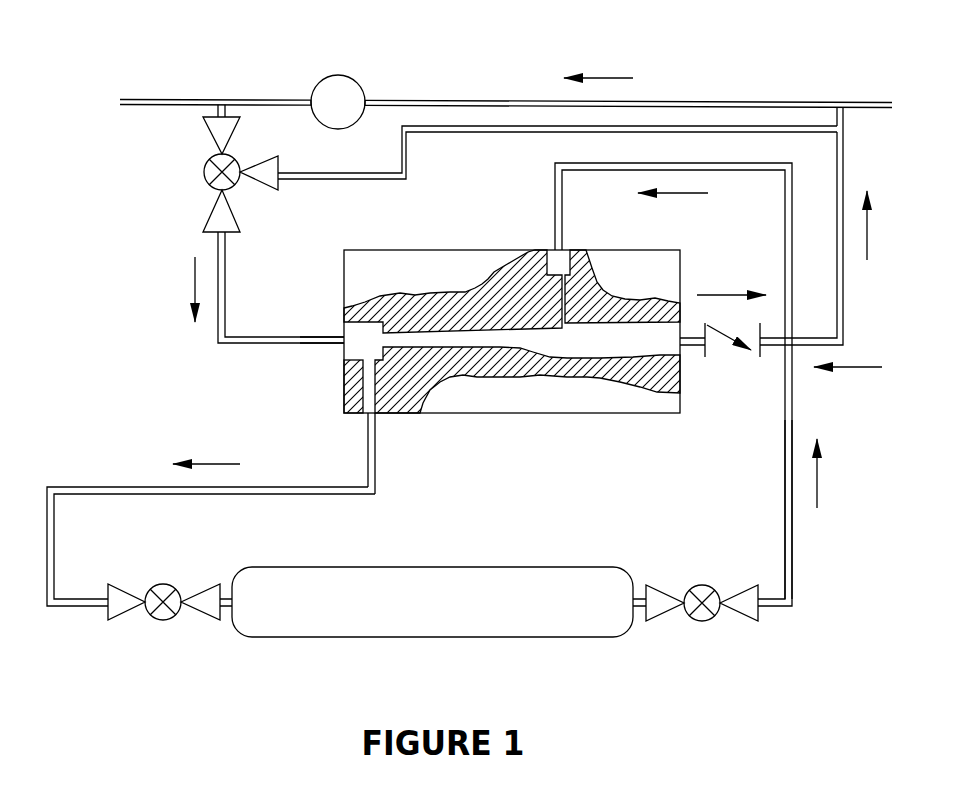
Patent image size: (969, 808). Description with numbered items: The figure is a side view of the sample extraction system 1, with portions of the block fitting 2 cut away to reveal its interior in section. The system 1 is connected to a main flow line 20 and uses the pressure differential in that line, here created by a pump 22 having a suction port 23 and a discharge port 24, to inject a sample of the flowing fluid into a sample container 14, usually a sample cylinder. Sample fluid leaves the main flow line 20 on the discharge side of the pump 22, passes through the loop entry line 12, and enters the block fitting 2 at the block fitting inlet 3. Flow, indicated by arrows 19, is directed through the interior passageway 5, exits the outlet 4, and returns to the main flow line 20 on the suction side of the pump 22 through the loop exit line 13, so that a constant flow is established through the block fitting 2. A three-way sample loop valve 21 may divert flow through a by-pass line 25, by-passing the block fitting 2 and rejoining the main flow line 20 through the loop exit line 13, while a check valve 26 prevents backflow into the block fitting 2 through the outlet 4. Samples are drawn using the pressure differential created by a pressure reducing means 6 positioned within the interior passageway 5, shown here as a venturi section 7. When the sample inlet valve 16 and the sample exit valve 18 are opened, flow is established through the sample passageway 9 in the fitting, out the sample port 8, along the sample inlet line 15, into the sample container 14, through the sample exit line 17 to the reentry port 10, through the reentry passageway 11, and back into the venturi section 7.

The sample extraction system 1 is at (854, 373).
The block fitting 2 is at (418, 250).
The block fitting inlet 3 is at (344, 332).
The outlet 4 is at (682, 350).
The interior passageway 5 is at (498, 337).
The pressure reducing means 6 is at (632, 334).
The venturi section 7 is at (569, 350).
The sample port 8 is at (375, 414).
The sample passageway 9 is at (365, 383).
The reentry port 10 is at (562, 250).
The reentry passageway 11 is at (558, 293).
The loop entry line 12 is at (225, 267).
The loop exit line 13 is at (843, 150).
The sample container 14 is at (447, 567).
The sample inlet line 15 is at (322, 494).
The sample inlet valve 16 is at (153, 618).
The sample exit line 17 is at (792, 390).
The sample exit valve 18 is at (697, 622).
The arrows 19 is at (608, 78).
The main flow line 20 is at (705, 101).
The sample loop valve 21 is at (232, 160).
The pump 22 is at (333, 75).
The suction port 23 is at (367, 98).
The discharge port 24 is at (311, 96).
The by-pass line 25 is at (407, 157).
The check valve 26 is at (763, 353).